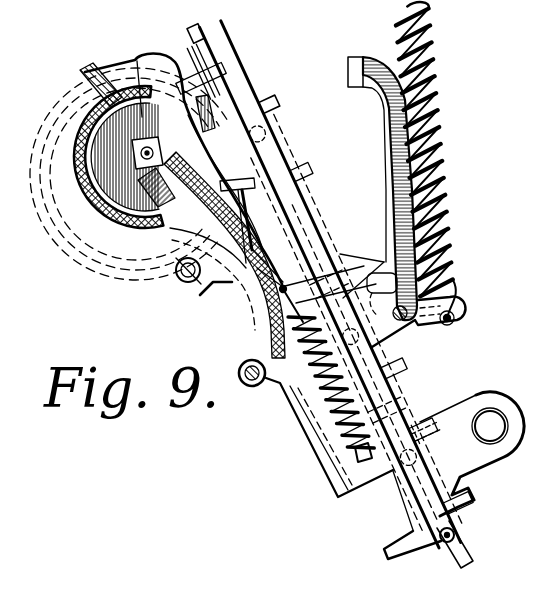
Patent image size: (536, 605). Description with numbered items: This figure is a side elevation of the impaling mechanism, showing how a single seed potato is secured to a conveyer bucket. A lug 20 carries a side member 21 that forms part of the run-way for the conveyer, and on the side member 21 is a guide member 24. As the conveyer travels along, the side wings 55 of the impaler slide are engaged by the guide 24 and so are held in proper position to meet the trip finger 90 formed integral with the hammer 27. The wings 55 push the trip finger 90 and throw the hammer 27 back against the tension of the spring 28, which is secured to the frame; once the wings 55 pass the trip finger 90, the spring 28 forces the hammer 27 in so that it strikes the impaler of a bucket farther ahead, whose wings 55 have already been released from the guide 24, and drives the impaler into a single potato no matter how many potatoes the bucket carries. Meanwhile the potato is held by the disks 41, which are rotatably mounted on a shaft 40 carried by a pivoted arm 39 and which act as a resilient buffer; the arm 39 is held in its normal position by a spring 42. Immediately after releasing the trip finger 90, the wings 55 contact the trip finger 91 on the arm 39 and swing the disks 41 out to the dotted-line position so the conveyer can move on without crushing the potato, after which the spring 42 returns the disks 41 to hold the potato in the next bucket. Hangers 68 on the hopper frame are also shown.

The lug 20 is at (450, 418).
The side member 21 is at (333, 463).
The guide member 24 is at (298, 221).
The hammer 27 is at (388, 160).
The spring 28 is at (452, 200).
The arm 39 is at (238, 333).
The shaft 40 is at (146, 157).
The disks 41 is at (97, 109).
The spring 42 is at (318, 383).
The side wings 55 is at (260, 101).
The hangers 68 is at (196, 284).
The trip finger 90 is at (386, 260).
The trip finger 91 is at (340, 273).